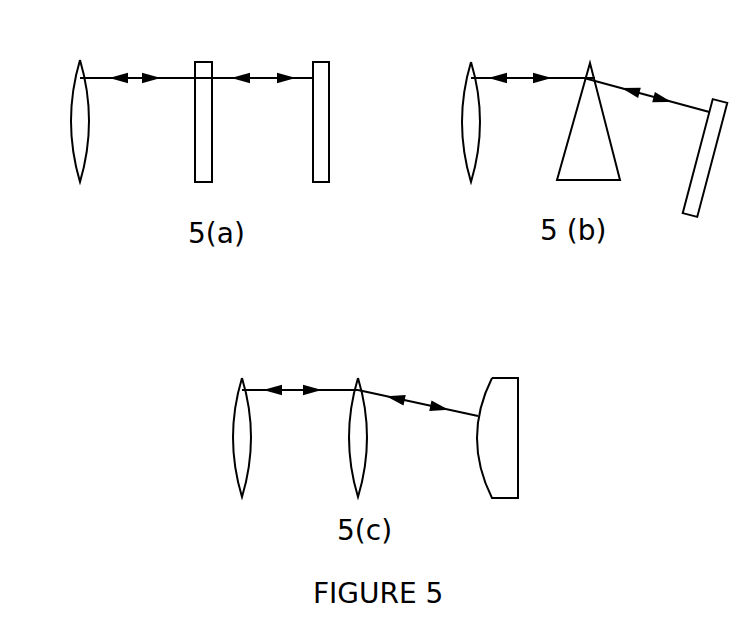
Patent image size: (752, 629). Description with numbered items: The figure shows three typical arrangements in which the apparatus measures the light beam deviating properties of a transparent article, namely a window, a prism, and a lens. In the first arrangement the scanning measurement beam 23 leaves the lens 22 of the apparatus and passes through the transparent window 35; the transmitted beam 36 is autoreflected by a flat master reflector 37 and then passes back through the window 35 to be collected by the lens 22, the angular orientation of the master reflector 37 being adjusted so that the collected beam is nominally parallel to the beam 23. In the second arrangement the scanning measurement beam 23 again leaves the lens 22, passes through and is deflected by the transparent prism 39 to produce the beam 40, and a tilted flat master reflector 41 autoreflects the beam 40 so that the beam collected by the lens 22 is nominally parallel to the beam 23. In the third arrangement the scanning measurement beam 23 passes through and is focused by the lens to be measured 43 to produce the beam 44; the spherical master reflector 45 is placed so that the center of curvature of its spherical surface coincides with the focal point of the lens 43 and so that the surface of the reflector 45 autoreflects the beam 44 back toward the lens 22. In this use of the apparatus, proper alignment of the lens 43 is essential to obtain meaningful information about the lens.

The lens 22 is at (78, 70).
The scanning measurement beam 23 is at (124, 78).
The transparent window 35 is at (195, 63).
The transmitted beam 36 is at (257, 78).
The flat master reflector 37 is at (313, 63).
The transparent prism 39 is at (590, 63).
The deflected beam 40 is at (650, 78).
The flat master reflector 41 is at (699, 150).
The lens to be measured 43 is at (356, 380).
The focused beam 44 is at (410, 401).
The spherical master reflector 45 is at (480, 466).